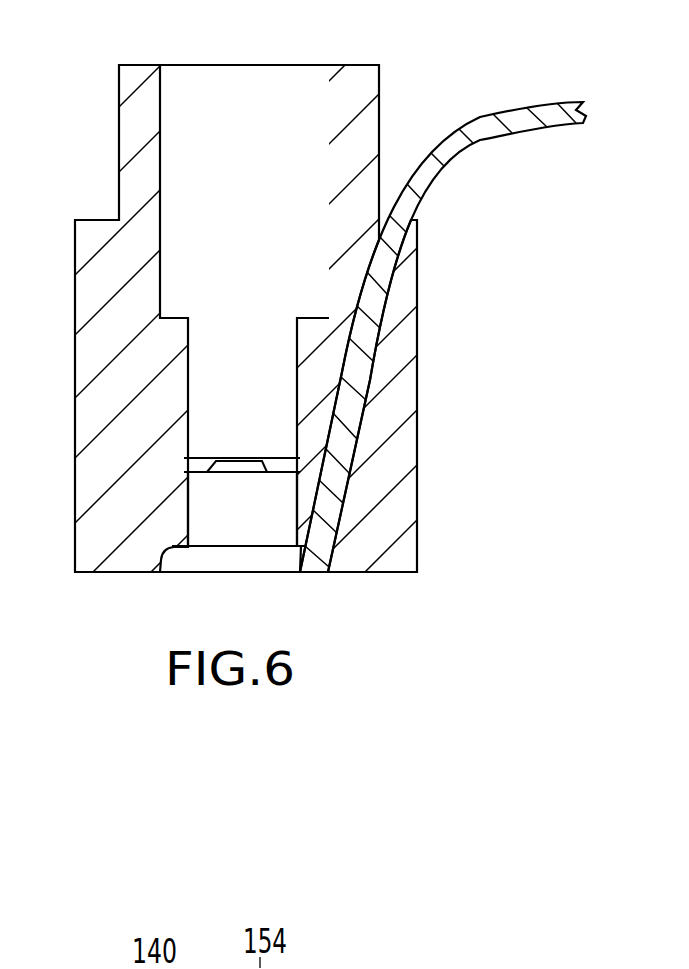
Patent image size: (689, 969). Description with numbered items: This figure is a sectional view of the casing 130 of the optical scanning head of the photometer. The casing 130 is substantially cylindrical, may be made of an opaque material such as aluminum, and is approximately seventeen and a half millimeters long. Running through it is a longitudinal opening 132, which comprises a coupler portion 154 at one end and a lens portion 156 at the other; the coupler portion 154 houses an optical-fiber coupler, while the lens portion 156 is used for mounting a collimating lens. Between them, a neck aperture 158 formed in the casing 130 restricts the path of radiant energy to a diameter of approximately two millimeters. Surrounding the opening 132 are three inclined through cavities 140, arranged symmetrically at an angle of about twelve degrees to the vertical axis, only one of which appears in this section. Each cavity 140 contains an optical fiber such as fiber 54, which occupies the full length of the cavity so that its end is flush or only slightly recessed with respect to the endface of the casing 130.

The casing 130 is at (98, 458).
The through longitudinal opening 132 is at (253, 56).
The coupler portion 154 is at (308, 93).
The optical fiber 54 is at (526, 113).
The through cavities 140 is at (344, 520).
The neck aperture 158 is at (237, 462).
The lens portion 156 is at (213, 528).